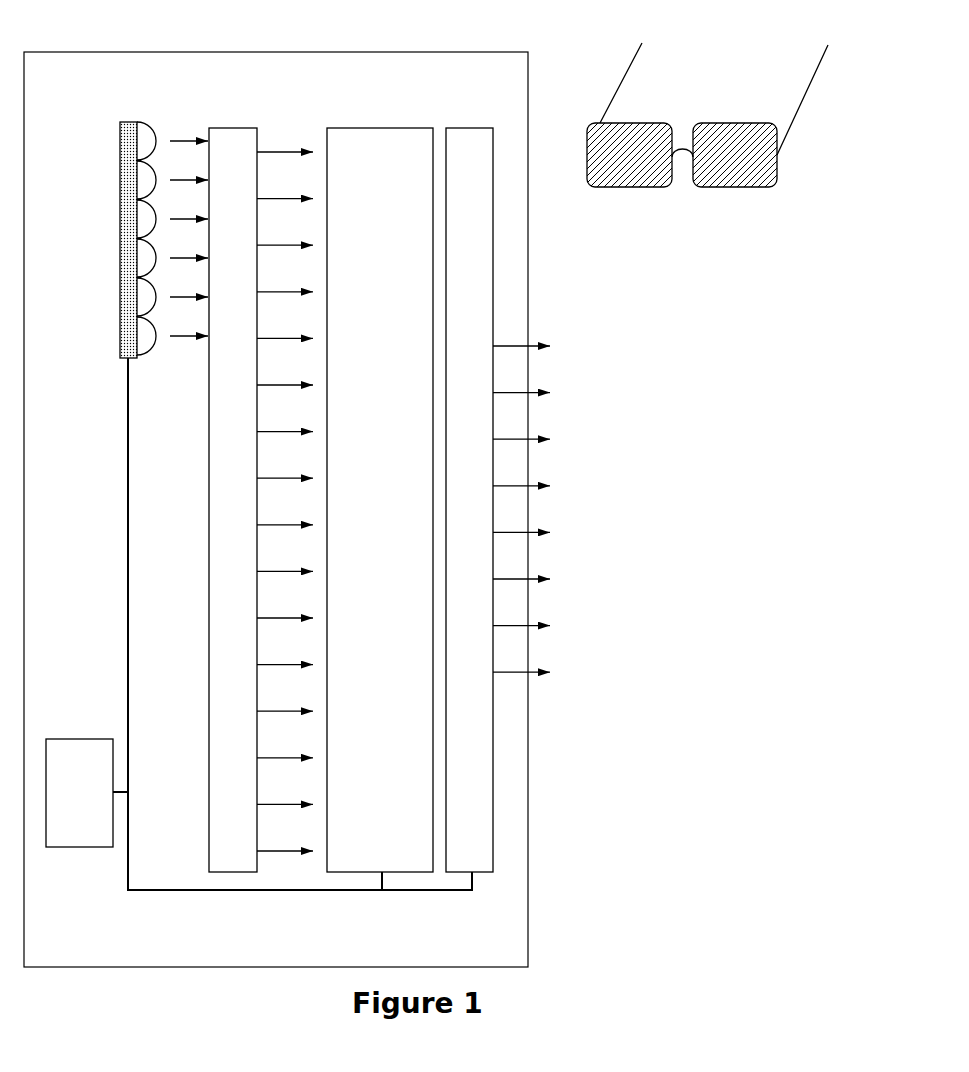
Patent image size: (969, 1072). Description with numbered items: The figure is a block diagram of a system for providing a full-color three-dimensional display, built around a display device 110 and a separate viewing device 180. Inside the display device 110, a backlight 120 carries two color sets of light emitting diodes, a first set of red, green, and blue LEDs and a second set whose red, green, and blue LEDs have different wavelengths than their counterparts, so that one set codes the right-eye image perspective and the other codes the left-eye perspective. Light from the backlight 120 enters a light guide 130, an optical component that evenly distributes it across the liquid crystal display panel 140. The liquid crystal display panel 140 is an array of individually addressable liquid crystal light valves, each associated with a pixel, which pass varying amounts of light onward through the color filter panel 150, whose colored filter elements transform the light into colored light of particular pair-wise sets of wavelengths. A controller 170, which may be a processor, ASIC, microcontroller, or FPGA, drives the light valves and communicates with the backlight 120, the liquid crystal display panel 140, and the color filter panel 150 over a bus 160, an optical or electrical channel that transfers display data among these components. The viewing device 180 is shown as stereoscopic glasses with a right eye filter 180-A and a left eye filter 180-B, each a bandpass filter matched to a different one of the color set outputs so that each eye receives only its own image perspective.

The display device 110 is at (157, 51).
The backlight 120 is at (129, 119).
The light guide 130 is at (232, 120).
The liquid crystal display panel 140 is at (381, 120).
The color filter panel 150 is at (466, 120).
The bus 160 is at (126, 468).
The controller 170 is at (94, 739).
The viewing device 180 is at (682, 135).
The right eye filter 180-A is at (660, 187).
The left eye filter 180-B is at (766, 187).